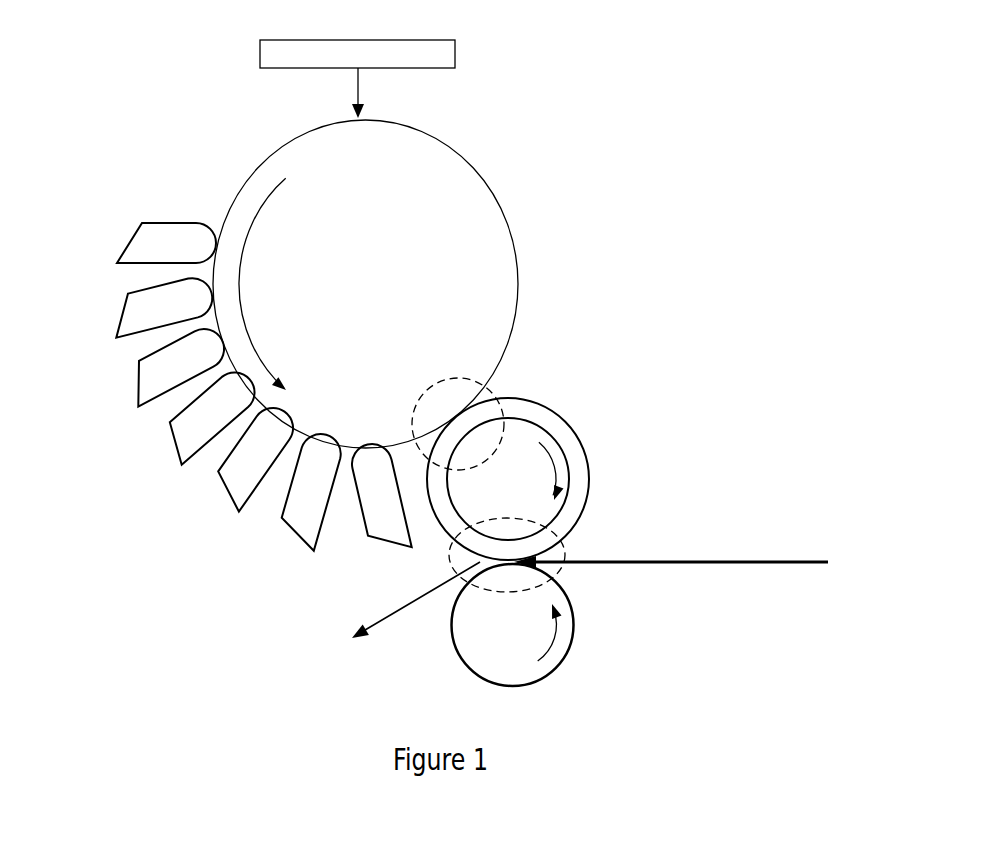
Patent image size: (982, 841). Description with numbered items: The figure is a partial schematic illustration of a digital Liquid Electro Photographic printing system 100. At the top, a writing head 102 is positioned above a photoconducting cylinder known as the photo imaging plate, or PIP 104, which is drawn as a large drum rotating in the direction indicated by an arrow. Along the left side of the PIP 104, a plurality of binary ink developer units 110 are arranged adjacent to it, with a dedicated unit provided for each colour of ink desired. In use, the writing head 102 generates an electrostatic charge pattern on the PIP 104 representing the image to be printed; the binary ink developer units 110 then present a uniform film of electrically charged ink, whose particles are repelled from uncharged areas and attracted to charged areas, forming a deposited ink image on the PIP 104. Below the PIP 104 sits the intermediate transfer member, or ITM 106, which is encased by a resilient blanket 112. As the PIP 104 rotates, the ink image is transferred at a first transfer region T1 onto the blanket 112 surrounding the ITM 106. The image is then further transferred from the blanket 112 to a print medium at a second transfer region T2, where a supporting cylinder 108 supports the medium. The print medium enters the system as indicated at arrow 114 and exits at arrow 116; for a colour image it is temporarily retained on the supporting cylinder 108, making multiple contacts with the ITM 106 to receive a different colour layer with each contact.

The Liquid Electro Photographic printing system 100 is at (712, 68).
The writing head 102 is at (342, 38).
The photo imaging plate (PIP) 104 is at (380, 296).
The intermediate transfer member (ITM) 106 is at (524, 474).
The supporting cylinder 108 is at (527, 635).
The binary ink developer (BID) units 110 is at (178, 447).
The resilient blanket 112 is at (557, 410).
The arrow indicating print medium entry 114 is at (797, 559).
The arrow indicating print medium exit 116 is at (390, 611).
The first transfer region T1 is at (502, 383).
The second transfer region T2 is at (567, 551).